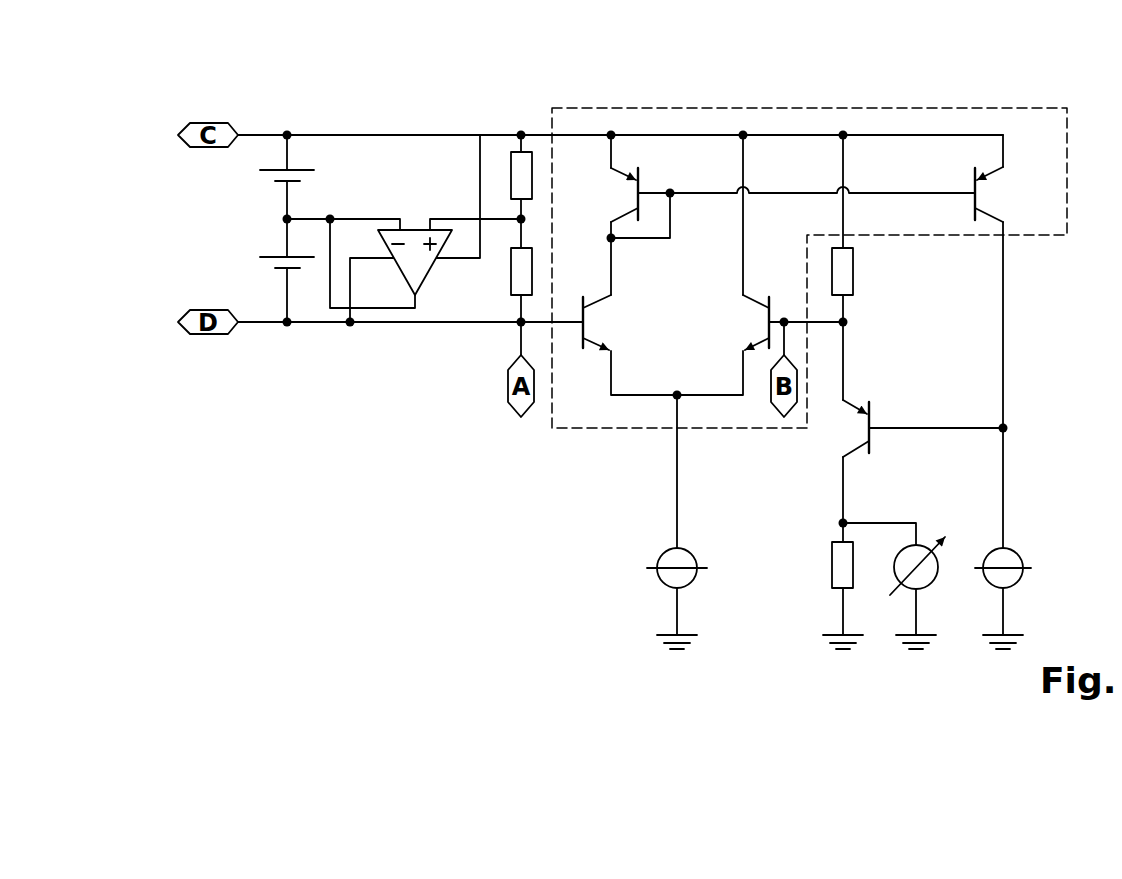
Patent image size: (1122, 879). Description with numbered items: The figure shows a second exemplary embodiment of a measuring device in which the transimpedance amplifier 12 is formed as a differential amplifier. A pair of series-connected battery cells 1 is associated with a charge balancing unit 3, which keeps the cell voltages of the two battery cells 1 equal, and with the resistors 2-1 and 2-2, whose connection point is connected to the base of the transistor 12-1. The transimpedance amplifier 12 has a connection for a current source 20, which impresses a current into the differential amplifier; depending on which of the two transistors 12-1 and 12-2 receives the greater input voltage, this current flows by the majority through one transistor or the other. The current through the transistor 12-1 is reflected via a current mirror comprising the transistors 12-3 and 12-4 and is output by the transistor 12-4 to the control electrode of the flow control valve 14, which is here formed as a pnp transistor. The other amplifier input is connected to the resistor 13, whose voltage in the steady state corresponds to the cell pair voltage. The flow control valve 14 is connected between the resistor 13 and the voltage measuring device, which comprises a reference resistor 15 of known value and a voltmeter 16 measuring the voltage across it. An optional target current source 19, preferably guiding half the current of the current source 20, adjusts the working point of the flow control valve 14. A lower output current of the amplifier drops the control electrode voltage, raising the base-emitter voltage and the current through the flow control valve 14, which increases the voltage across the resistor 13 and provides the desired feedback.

The battery cell 1 is at (275, 182).
The charge balancing unit 3 is at (420, 229).
The resistor 2-1 is at (510, 185).
The resistor 2-2 is at (510, 270).
The transimpedance amplifier 12 is at (910, 107).
The transistor 12-1 is at (587, 318).
The transistor 12-2 is at (765, 318).
The transistor 12-3 is at (634, 191).
The transistor 12-4 is at (979, 191).
The resistor 13 is at (855, 270).
The flow control valve 14 is at (866, 426).
The reference resistor 15 is at (832, 568).
The voltmeter 16 is at (932, 585).
The target current source 19 is at (1025, 579).
The current source 20 is at (660, 585).